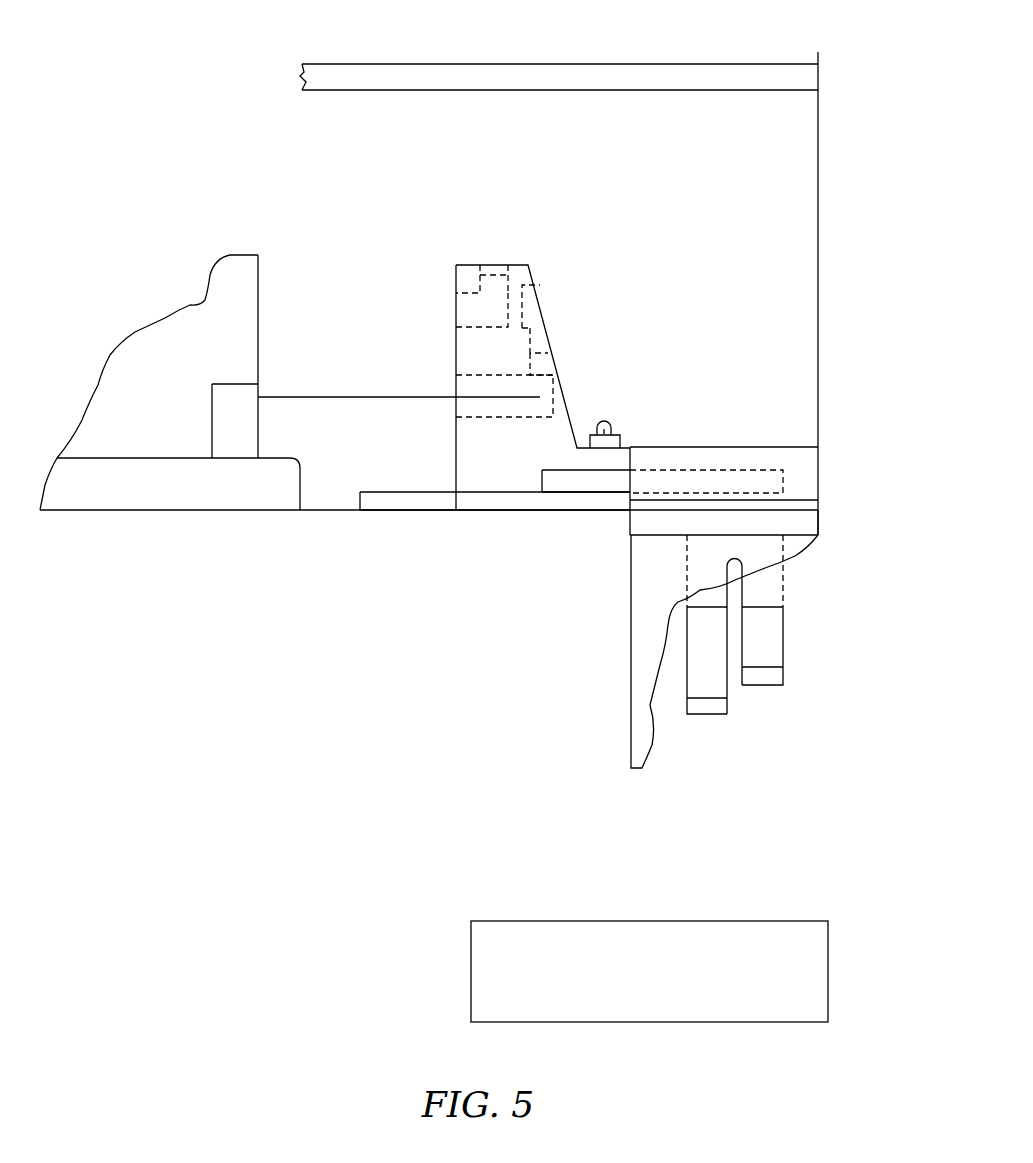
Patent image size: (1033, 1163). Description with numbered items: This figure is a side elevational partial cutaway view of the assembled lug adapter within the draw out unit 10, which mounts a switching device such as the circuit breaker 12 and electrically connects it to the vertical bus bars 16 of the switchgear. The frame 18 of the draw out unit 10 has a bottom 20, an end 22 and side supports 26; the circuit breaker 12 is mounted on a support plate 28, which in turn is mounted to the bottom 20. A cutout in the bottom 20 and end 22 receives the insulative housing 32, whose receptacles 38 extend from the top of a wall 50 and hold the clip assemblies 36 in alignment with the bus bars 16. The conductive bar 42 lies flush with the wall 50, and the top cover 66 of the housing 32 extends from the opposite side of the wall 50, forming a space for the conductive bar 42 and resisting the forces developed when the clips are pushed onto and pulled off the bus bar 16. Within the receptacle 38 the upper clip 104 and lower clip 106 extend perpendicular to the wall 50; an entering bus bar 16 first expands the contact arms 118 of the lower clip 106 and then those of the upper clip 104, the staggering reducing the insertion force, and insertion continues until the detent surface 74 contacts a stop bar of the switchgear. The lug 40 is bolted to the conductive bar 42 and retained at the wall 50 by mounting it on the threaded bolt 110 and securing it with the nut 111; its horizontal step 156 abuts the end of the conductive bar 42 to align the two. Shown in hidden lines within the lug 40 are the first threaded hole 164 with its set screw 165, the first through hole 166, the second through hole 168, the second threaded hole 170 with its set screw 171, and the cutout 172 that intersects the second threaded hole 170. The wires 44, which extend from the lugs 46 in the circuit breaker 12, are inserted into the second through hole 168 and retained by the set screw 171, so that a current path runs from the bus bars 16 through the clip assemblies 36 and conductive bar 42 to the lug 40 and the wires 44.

The draw out unit 10 is at (252, 664).
The circuit breaker 12 is at (258, 281).
The bus bars 16 is at (725, 921).
The frame 18 is at (838, 94).
The bottom 20 is at (380, 510).
The end 22 is at (818, 258).
The side supports 26 is at (570, 62).
The support plate 28 is at (162, 493).
The insulative housing 32 is at (820, 529).
The clip assemblies 36 is at (838, 655).
The receptacles 38 is at (629, 690).
The lug 40 is at (505, 480).
The conductive bar 42 is at (564, 485).
The wires 44 is at (372, 397).
The lugs 46 is at (258, 388).
The wall 50 is at (581, 500).
The cover 66 is at (760, 447).
The detent surface 74 is at (443, 510).
The upper clip 104 is at (787, 647).
The lower clip 106 is at (728, 690).
The threaded bolt 110 is at (612, 425).
The nut 111 is at (620, 436).
The contact arm 118 is at (782, 636).
The horizontal step 156 is at (548, 483).
The first threaded hole 164 is at (492, 265).
The set screw 165 is at (480, 286).
The first through hole 166 is at (470, 311).
The second through hole 168 is at (456, 390).
The second threaded hole 170 is at (541, 340).
The set screw 171 is at (558, 355).
The cutout 172 is at (536, 305).